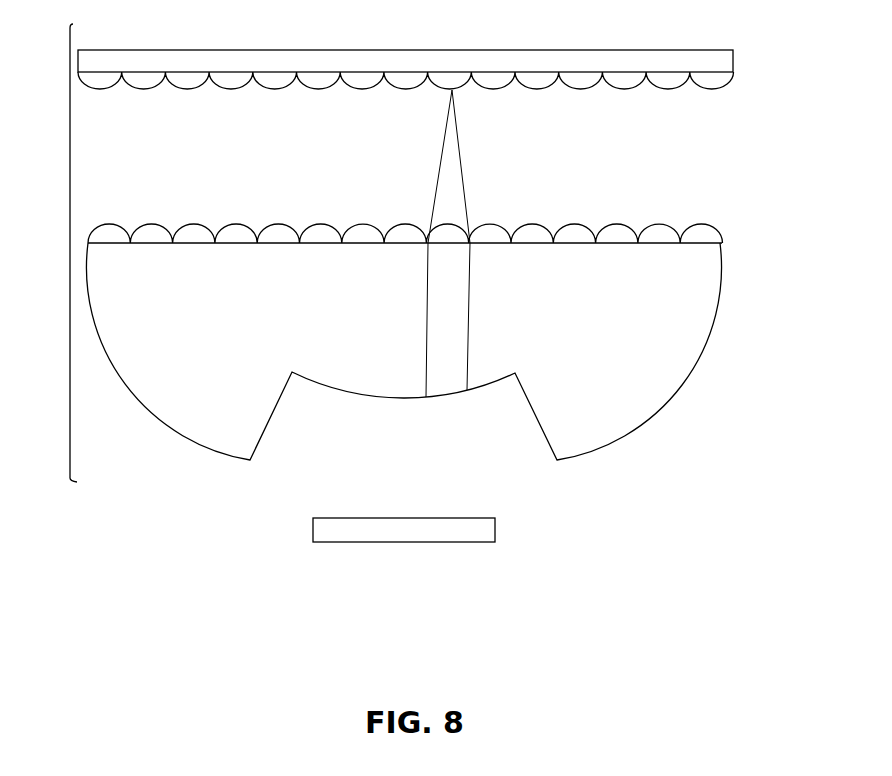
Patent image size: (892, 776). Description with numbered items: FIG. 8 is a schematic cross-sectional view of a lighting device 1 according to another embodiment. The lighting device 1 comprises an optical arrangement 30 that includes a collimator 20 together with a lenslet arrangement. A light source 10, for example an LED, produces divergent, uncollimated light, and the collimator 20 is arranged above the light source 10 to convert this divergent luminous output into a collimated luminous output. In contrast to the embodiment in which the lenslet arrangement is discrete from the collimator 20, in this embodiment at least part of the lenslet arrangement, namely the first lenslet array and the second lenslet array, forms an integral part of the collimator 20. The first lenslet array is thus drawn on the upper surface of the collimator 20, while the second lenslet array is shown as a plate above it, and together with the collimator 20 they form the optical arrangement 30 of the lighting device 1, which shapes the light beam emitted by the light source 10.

The lighting device 1 is at (421, 332).
The light source 10 is at (482, 532).
The collimator 20 is at (403, 238).
The optical arrangement 30 is at (70, 252).